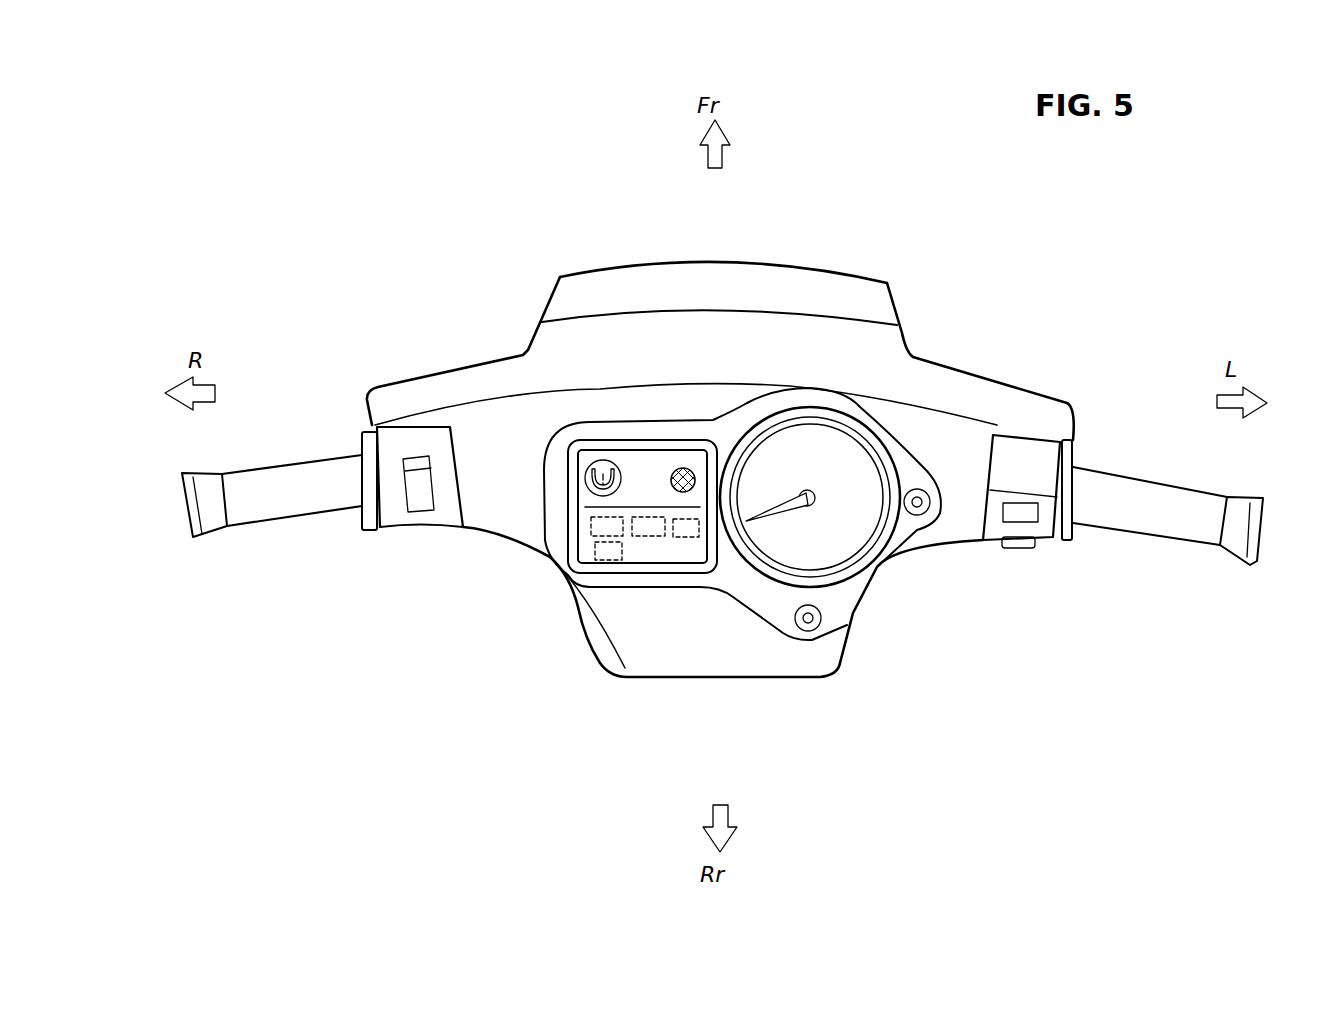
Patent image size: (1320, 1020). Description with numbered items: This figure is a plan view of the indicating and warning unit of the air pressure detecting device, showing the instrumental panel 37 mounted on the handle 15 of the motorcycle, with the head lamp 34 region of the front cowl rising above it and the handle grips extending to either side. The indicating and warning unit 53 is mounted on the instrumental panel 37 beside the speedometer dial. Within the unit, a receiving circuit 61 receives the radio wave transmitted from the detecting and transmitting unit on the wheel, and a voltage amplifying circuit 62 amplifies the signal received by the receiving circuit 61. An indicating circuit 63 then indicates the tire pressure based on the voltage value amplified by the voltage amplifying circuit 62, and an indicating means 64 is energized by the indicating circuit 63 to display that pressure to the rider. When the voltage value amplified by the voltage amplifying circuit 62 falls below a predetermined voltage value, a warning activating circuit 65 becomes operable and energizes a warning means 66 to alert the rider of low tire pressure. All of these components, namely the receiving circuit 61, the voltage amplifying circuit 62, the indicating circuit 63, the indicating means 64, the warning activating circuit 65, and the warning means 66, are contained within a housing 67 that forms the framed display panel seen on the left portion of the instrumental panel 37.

The handle 15 is at (1097, 470).
The head lamp 34 is at (817, 267).
The instrumental panel 37 is at (898, 437).
The indicating and warning unit 53 is at (637, 424).
The receiving circuit 61 is at (593, 525).
The voltage amplifying circuit 62 is at (647, 537).
The indicating circuit 63 is at (685, 537).
The indicating means 64 is at (608, 458).
The warning activating circuit 65 is at (595, 552).
The warning means 66 is at (685, 468).
The housing 67 is at (568, 470).